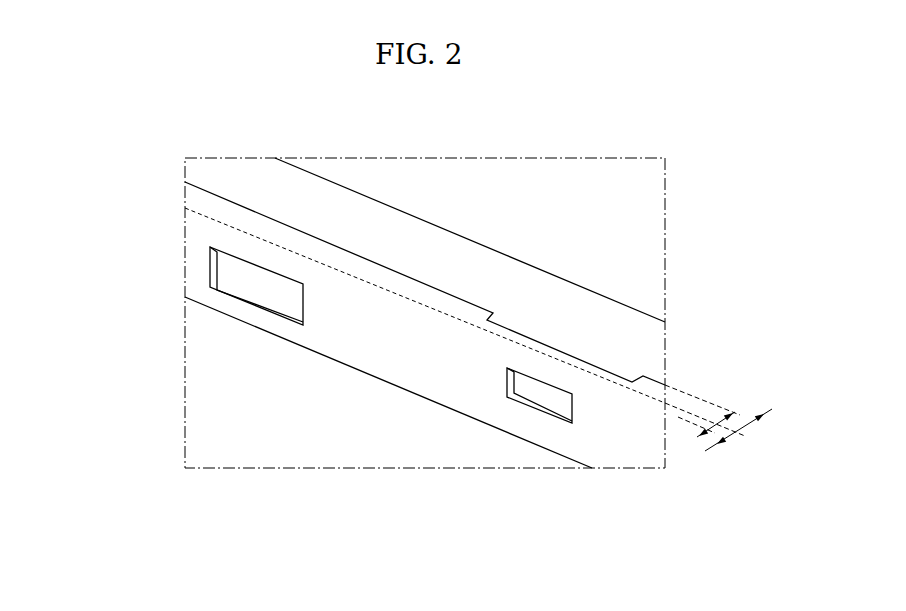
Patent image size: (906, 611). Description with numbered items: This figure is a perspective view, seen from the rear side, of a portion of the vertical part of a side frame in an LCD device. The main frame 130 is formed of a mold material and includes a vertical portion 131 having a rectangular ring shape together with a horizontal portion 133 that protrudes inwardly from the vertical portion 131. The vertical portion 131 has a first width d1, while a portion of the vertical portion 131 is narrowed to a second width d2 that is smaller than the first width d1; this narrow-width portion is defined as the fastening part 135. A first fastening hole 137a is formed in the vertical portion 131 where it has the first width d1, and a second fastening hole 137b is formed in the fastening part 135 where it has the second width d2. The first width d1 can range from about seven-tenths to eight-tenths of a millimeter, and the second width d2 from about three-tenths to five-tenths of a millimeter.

The main frame 130 is at (110, 105).
The vertical portion 131 is at (193, 238).
The horizontal portion 133 is at (233, 177).
The fastening part 135 is at (634, 354).
The first fastening hole 137a is at (238, 300).
The second fastening hole 137b is at (538, 417).
The first width d1 is at (738, 430).
The second width d2 is at (719, 413).